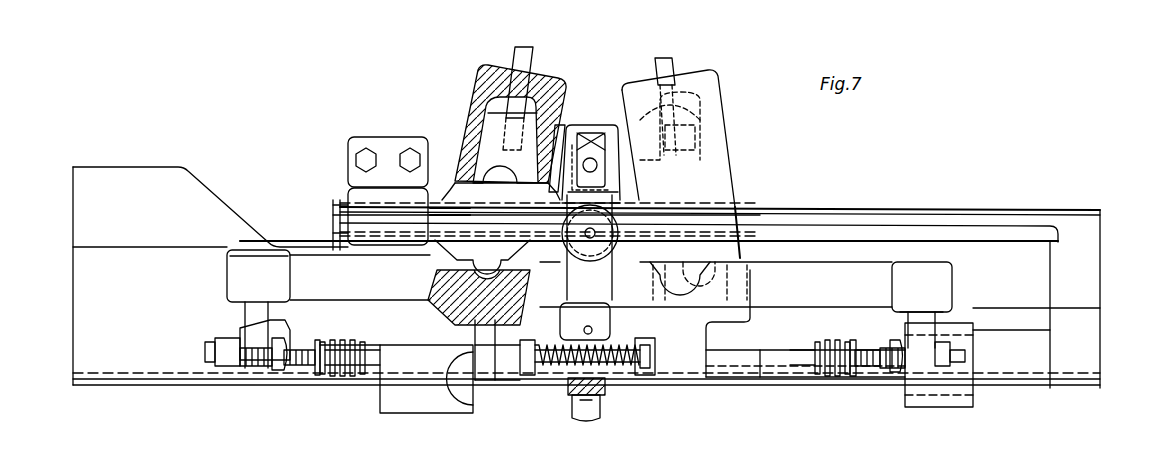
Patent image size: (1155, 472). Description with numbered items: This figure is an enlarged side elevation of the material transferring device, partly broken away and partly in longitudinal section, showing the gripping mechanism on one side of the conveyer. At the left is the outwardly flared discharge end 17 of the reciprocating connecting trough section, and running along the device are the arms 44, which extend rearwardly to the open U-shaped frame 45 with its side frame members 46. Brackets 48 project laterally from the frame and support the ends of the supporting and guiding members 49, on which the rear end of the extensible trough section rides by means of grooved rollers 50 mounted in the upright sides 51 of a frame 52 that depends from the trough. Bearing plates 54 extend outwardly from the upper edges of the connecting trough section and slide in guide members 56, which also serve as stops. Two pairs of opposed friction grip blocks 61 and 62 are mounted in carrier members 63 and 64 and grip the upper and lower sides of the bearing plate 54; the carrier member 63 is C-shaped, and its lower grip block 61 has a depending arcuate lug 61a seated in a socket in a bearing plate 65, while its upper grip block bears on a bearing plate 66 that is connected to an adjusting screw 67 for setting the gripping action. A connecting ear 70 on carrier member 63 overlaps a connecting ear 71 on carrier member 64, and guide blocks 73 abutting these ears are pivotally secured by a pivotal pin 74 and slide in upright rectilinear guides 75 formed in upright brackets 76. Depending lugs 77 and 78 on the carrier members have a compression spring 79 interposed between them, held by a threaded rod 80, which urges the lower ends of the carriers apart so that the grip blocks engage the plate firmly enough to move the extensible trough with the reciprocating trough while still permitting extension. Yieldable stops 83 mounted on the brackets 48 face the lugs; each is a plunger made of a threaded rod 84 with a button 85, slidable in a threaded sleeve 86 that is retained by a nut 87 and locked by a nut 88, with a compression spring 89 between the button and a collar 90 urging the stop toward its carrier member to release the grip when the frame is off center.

The outwardly flared discharge end 17 is at (128, 175).
The arms 44 is at (1000, 330).
The frame 45 is at (957, 407).
The side frame members 46 is at (785, 352).
The brackets 48 is at (245, 318).
The supporting and guiding members 49 is at (840, 262).
The grooved rollers 50 is at (620, 265).
The upright sides 51 is at (603, 400).
The frame 52 is at (572, 380).
The bearing plates 54 is at (985, 216).
The guide members 56 is at (390, 137).
The friction grip blocks 61 is at (470, 200).
The depending arcuate lug 61a is at (440, 276).
The friction grip blocks 62 is at (738, 185).
The carrier member 63 is at (475, 95).
The carrier member 64 is at (655, 80).
The bearing plate 65 is at (508, 382).
The bearing plate 66 is at (551, 82).
The adjusting screw 67 is at (516, 62).
The connecting ear 70 is at (590, 125).
The connecting ear 71 is at (598, 133).
The guide blocks 73 is at (664, 105).
The pivotal pin 74 is at (600, 165).
The upright rectilinear guides 75 is at (640, 95).
The upright brackets 76 is at (640, 136).
The depending lug 77 is at (473, 405).
The depending lug 78 is at (712, 380).
The compression spring 79 is at (525, 380).
The threaded rod 80 is at (640, 375).
The yieldable stops 83 is at (283, 372).
The threaded rod 84 is at (210, 362).
The button 85 is at (365, 378).
The threaded sleeve 86 is at (240, 328).
The nut 87 is at (225, 366).
The nut 88 is at (270, 366).
The compression spring 89 is at (320, 375).
The collar 90 is at (300, 366).